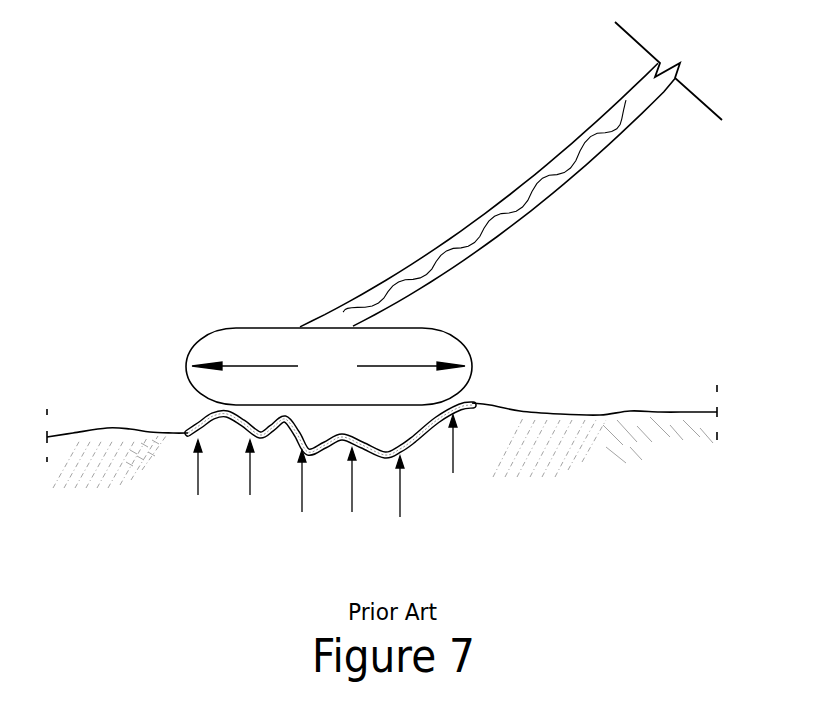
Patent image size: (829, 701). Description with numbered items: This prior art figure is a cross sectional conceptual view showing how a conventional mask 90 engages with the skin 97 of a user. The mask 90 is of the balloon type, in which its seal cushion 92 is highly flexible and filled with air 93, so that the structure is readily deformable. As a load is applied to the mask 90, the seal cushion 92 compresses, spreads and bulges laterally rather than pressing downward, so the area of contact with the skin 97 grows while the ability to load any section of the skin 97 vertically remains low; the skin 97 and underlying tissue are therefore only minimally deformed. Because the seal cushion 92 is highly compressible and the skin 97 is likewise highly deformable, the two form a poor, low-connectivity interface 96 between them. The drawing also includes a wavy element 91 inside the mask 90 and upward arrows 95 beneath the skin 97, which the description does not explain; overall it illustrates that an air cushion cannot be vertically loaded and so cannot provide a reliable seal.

The mask 90 is at (522, 150).
The strip core 91 is at (595, 160).
The seal cushion 92 is at (187, 365).
The air 93 is at (280, 352).
The air flow arrows 95 is at (340, 537).
The interface 96 is at (383, 430).
The skin 97 is at (425, 459).